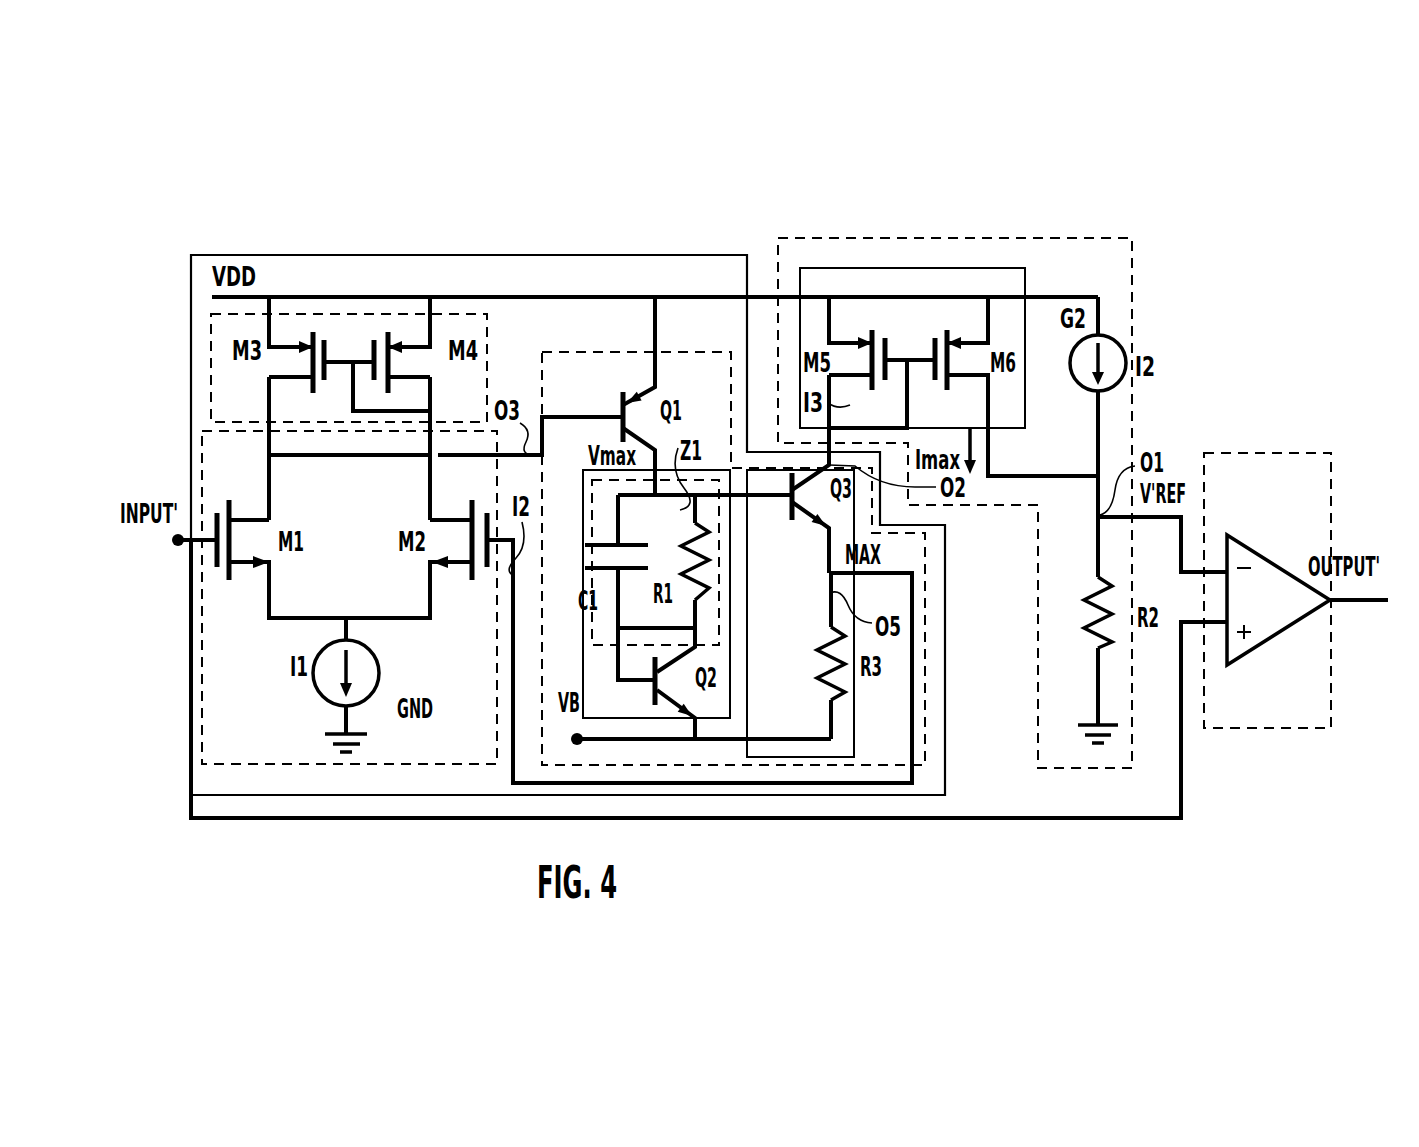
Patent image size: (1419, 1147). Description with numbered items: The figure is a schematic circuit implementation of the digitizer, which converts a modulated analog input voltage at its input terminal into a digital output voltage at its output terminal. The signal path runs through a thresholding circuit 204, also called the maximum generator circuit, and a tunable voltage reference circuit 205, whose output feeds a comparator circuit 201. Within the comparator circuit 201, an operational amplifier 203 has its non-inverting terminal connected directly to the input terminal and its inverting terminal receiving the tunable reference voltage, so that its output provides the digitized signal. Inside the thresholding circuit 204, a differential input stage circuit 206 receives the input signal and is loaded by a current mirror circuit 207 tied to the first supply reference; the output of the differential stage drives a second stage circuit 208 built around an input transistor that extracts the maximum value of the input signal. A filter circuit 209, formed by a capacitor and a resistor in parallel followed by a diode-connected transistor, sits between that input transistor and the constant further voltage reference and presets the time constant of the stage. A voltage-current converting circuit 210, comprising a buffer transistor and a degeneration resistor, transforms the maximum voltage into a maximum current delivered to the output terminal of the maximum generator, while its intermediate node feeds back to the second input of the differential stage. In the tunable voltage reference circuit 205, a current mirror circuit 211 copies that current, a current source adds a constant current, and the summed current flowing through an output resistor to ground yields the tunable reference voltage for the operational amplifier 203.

The comparator circuit 201 is at (1293, 478).
The operational amplifier 203 is at (1287, 610).
The thresholding circuit 204 is at (472, 278).
The tunable voltage reference circuit 205 is at (1068, 265).
The differential input stage circuit 206 is at (300, 735).
The current mirror circuit 207 is at (237, 387).
The second stage circuit 208 is at (570, 375).
The filter circuit 209 is at (602, 677).
The voltage-current converting circuit 210 is at (793, 683).
The current mirror circuit 211 is at (927, 280).